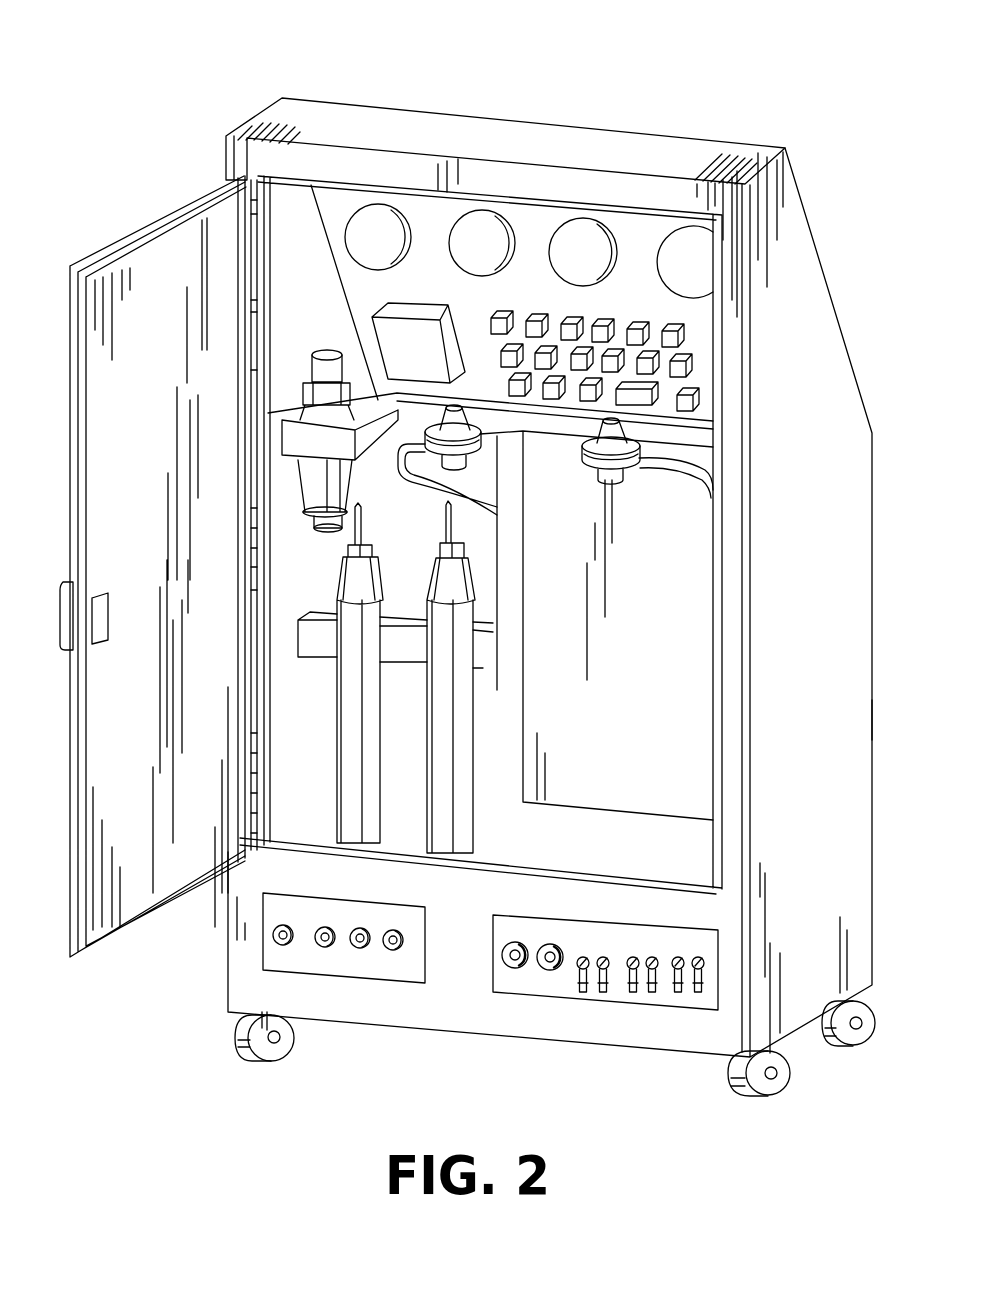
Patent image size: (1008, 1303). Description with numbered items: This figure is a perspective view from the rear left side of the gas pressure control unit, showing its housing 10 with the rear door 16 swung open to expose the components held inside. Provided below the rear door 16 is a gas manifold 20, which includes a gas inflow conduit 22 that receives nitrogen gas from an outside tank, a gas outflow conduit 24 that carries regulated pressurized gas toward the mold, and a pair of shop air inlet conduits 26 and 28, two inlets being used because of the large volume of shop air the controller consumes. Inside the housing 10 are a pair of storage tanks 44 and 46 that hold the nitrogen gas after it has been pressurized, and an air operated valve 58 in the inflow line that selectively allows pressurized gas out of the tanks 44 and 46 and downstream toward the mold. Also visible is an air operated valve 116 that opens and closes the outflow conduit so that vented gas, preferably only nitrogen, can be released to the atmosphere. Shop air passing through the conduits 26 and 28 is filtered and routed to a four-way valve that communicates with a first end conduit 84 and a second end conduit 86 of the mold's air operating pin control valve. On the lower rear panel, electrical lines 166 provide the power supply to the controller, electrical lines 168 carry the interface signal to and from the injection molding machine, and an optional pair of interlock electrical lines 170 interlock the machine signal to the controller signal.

The housing 10 is at (309, 92).
The rear door 16 is at (196, 250).
The gas manifold 20 is at (252, 941).
The gas inflow conduit 22 is at (360, 948).
The gas outflow conduit 24 is at (393, 950).
The first shop air inlet conduit 26 is at (283, 923).
The second shop air inlet conduit 28 is at (324, 948).
The storage tank 44 is at (360, 693).
The storage tank 46 is at (452, 695).
The air operated valve 58 is at (490, 450).
The first end conduit 84 is at (511, 968).
The second end conduit 86 is at (548, 970).
The air operated valve 116 is at (626, 472).
The electrical lines 166 is at (604, 957).
The electrical lines 168 is at (649, 994).
The interlock electrical lines 170 is at (700, 957).